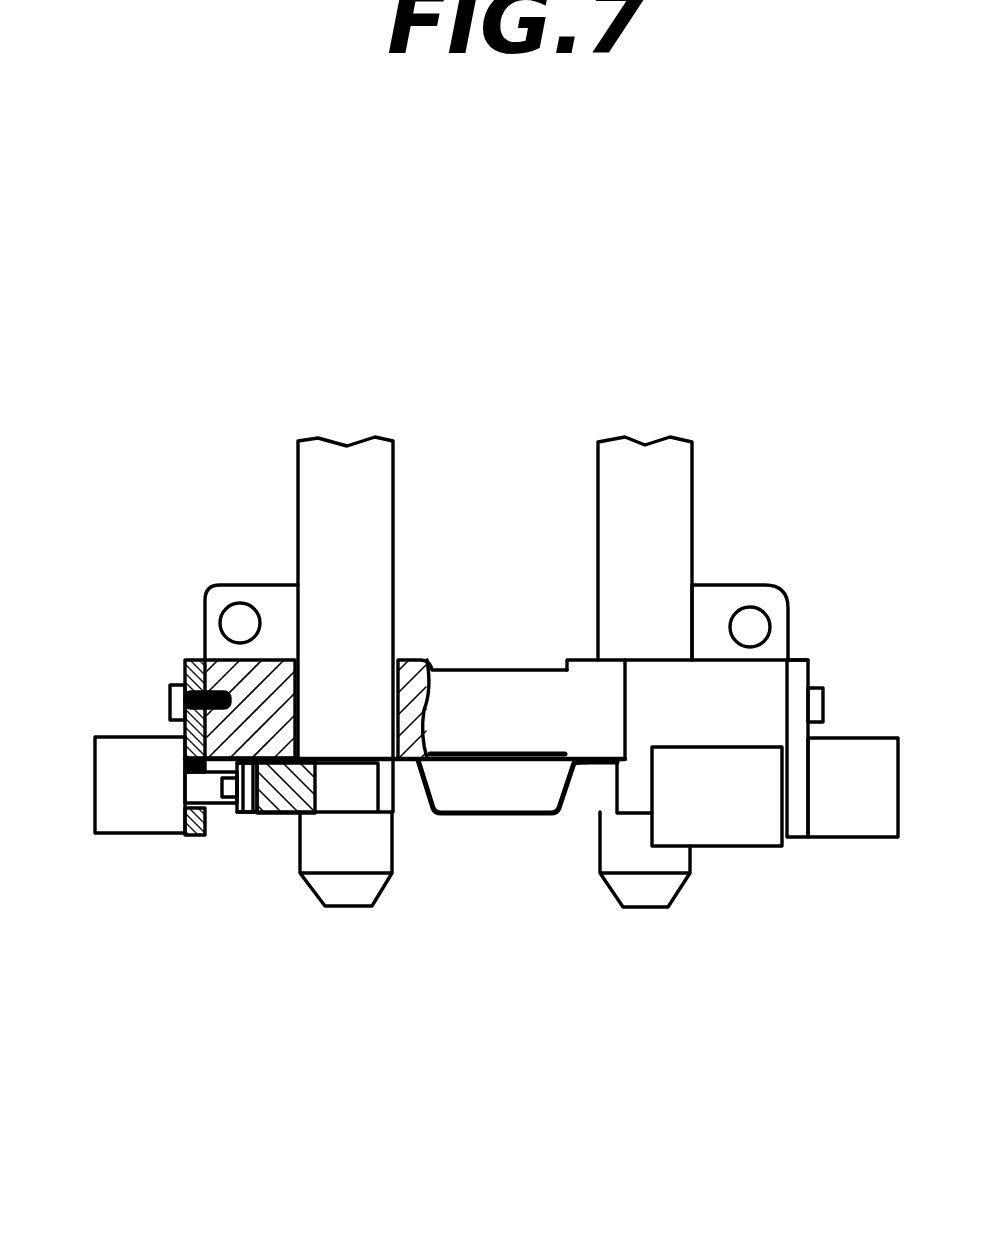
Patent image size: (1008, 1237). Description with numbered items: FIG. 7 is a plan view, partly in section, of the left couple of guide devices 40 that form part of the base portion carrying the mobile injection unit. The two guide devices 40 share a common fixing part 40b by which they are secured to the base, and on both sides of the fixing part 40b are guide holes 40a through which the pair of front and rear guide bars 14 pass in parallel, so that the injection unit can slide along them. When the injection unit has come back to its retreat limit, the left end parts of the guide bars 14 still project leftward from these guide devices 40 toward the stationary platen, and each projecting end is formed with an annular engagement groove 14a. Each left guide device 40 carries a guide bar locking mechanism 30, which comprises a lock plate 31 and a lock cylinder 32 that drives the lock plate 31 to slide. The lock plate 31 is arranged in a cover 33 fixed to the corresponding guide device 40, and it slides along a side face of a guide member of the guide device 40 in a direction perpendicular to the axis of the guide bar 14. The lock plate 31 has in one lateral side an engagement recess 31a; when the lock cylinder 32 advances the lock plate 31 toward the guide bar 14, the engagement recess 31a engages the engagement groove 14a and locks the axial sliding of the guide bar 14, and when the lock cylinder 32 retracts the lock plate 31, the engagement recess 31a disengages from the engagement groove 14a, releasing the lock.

The guide bar 14 is at (330, 493).
The annular engagement groove 14a is at (382, 778).
The guide bar locking mechanism 30 is at (233, 988).
The lock plate 31 is at (278, 817).
The engagement recess 31a is at (335, 815).
The lock cylinder 32 is at (140, 817).
The cover 33 is at (766, 845).
The guide device 40 is at (190, 662).
The guide hole 40a is at (300, 710).
The fixing part 40b is at (480, 683).